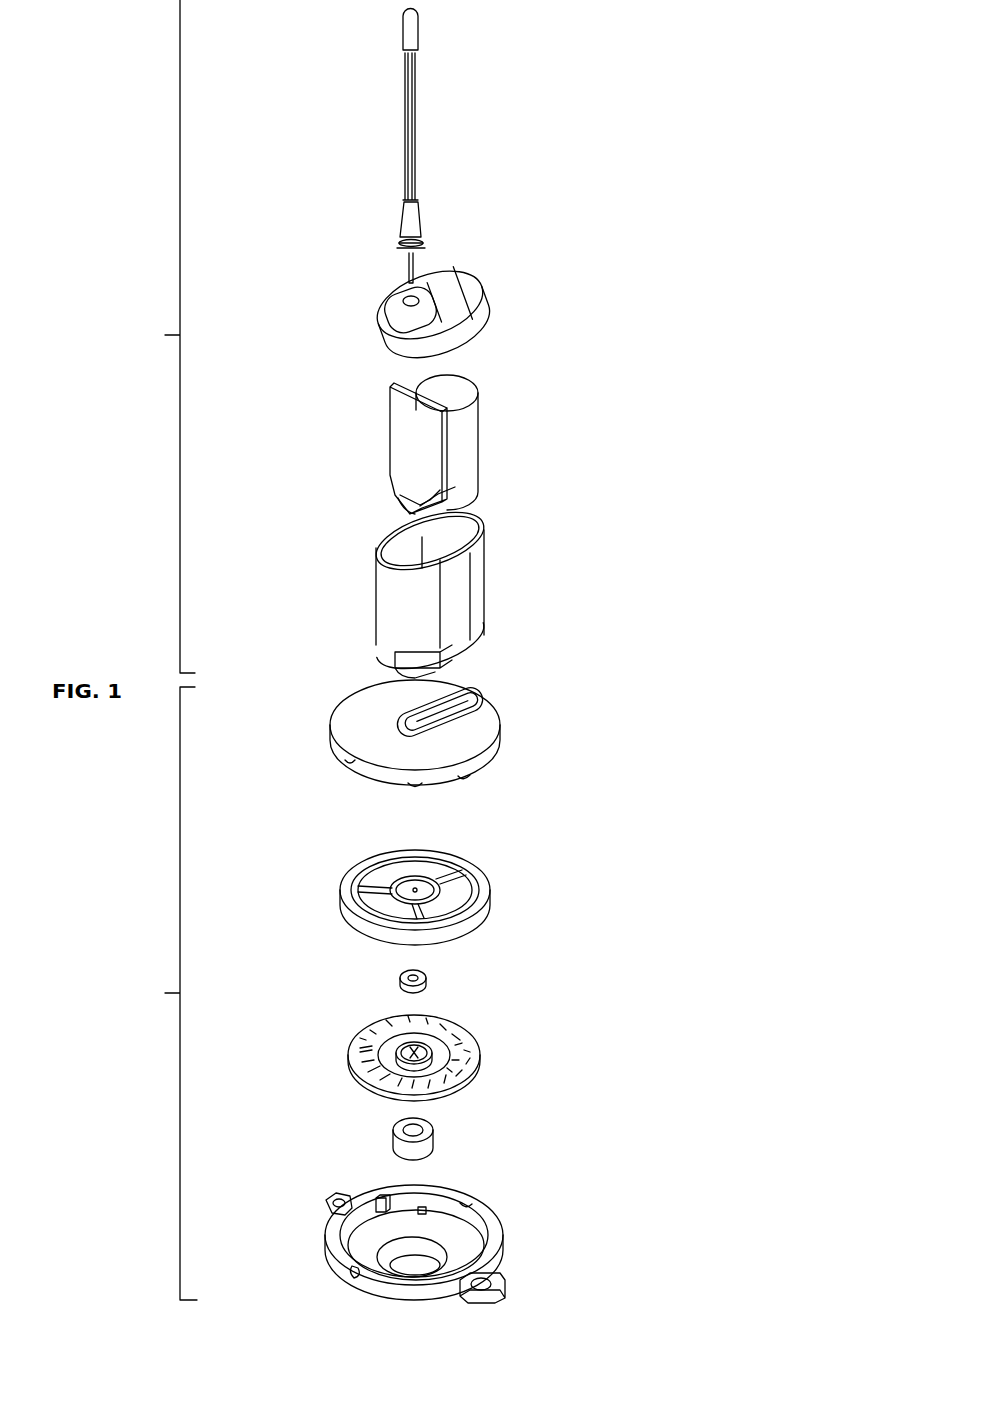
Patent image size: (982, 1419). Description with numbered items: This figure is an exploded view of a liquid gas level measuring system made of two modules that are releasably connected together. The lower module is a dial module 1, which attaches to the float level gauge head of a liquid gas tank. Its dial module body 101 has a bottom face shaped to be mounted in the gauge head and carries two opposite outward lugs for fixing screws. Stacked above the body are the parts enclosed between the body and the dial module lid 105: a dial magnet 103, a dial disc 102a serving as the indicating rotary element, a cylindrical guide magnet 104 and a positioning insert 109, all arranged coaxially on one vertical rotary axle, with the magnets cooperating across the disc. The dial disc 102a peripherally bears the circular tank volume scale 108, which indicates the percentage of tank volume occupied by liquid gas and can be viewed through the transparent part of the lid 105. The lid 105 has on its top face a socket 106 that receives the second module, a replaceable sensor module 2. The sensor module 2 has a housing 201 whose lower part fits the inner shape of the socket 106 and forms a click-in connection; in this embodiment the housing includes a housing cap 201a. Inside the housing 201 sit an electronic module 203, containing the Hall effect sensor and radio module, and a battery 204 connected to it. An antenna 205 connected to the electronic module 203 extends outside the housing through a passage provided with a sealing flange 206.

The dial module 1 is at (159, 993).
The sensor module 2 is at (158, 336).
The dial module body 101 is at (488, 1257).
The dial disc 102a is at (457, 1028).
The dial magnet 103 is at (433, 1140).
The cylindrical guide magnet 104 is at (470, 958).
The dial module lid 105 is at (470, 742).
The socket 106 is at (457, 703).
The tank volume scale 108 is at (377, 1027).
The positioning insert 109 is at (487, 880).
The housing 201 is at (462, 590).
The housing cap 201a is at (473, 290).
The electronic module 203 is at (412, 457).
The battery 204 is at (468, 430).
The antenna 205 is at (417, 138).
The sealing flange 206 is at (412, 220).